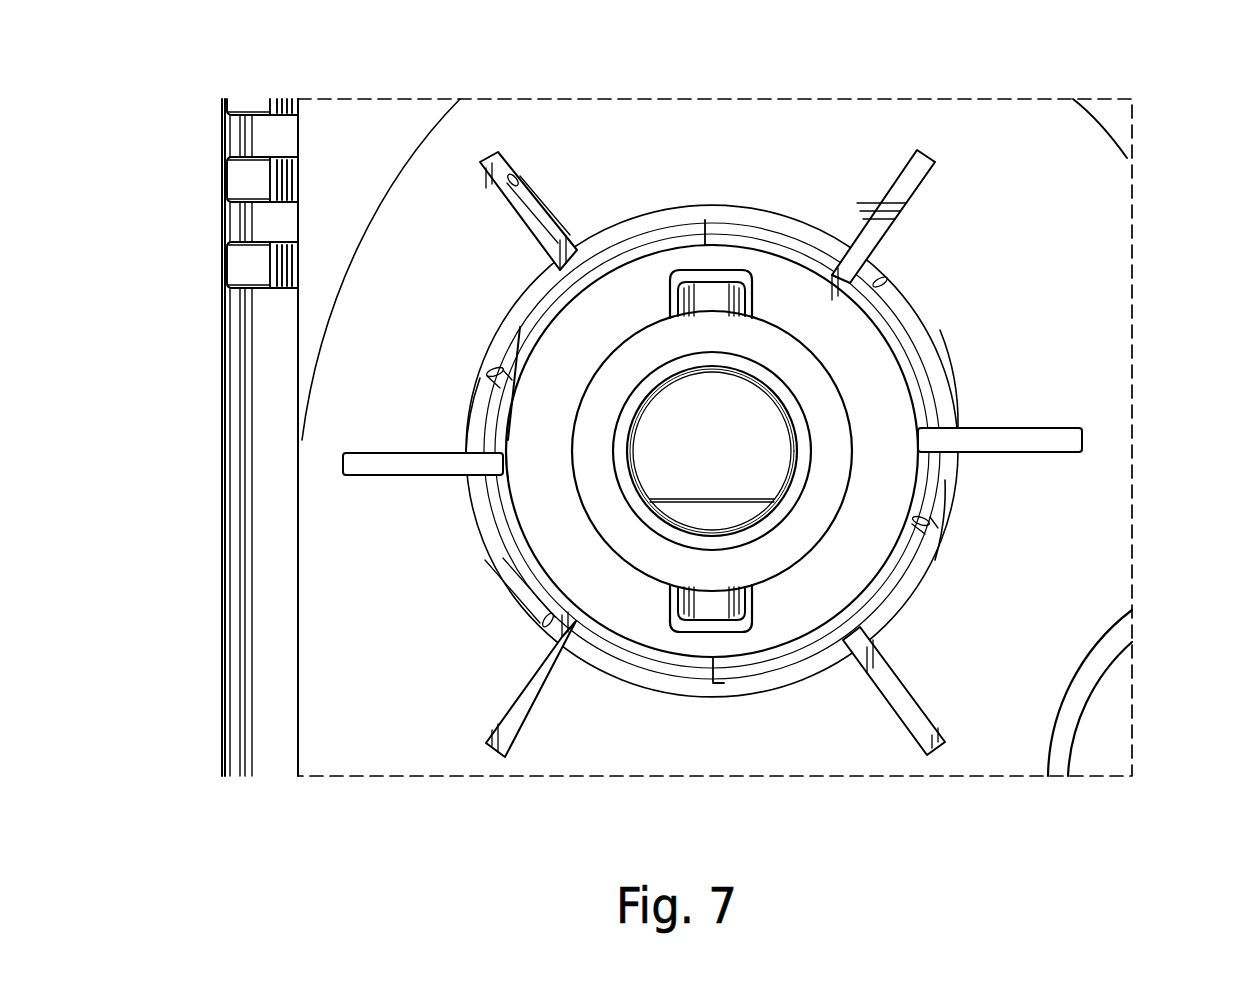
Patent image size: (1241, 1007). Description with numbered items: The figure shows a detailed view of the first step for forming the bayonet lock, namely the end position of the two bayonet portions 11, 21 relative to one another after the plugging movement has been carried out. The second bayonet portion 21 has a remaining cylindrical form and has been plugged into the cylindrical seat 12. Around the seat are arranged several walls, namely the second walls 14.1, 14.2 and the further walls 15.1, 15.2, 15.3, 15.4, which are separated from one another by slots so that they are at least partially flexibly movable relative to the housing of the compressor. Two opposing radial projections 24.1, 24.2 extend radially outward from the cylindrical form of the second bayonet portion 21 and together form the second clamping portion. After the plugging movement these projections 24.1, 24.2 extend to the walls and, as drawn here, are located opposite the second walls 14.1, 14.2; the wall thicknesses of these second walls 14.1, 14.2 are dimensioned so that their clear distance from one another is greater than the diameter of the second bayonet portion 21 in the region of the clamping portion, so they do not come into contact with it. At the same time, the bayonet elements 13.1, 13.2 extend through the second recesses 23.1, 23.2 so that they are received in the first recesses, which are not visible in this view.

The first bayonet portion 11 is at (813, 377).
The cylindrical seat 12 is at (780, 225).
The second bayonet portion 21 is at (803, 257).
The bayonet element 13.1 is at (710, 279).
The bayonet element 13.2 is at (708, 624).
The second wall 14.1 is at (616, 235).
The second wall 14.2 is at (750, 699).
The wall 15.1 is at (920, 353).
The wall 15.2 is at (945, 506).
The wall 15.3 is at (463, 511).
The wall 15.4 is at (470, 388).
The second recess 23.1 is at (670, 298).
The second recess 23.2 is at (670, 612).
The radial projection 24.1 is at (650, 214).
The radial projection 24.2 is at (826, 648).